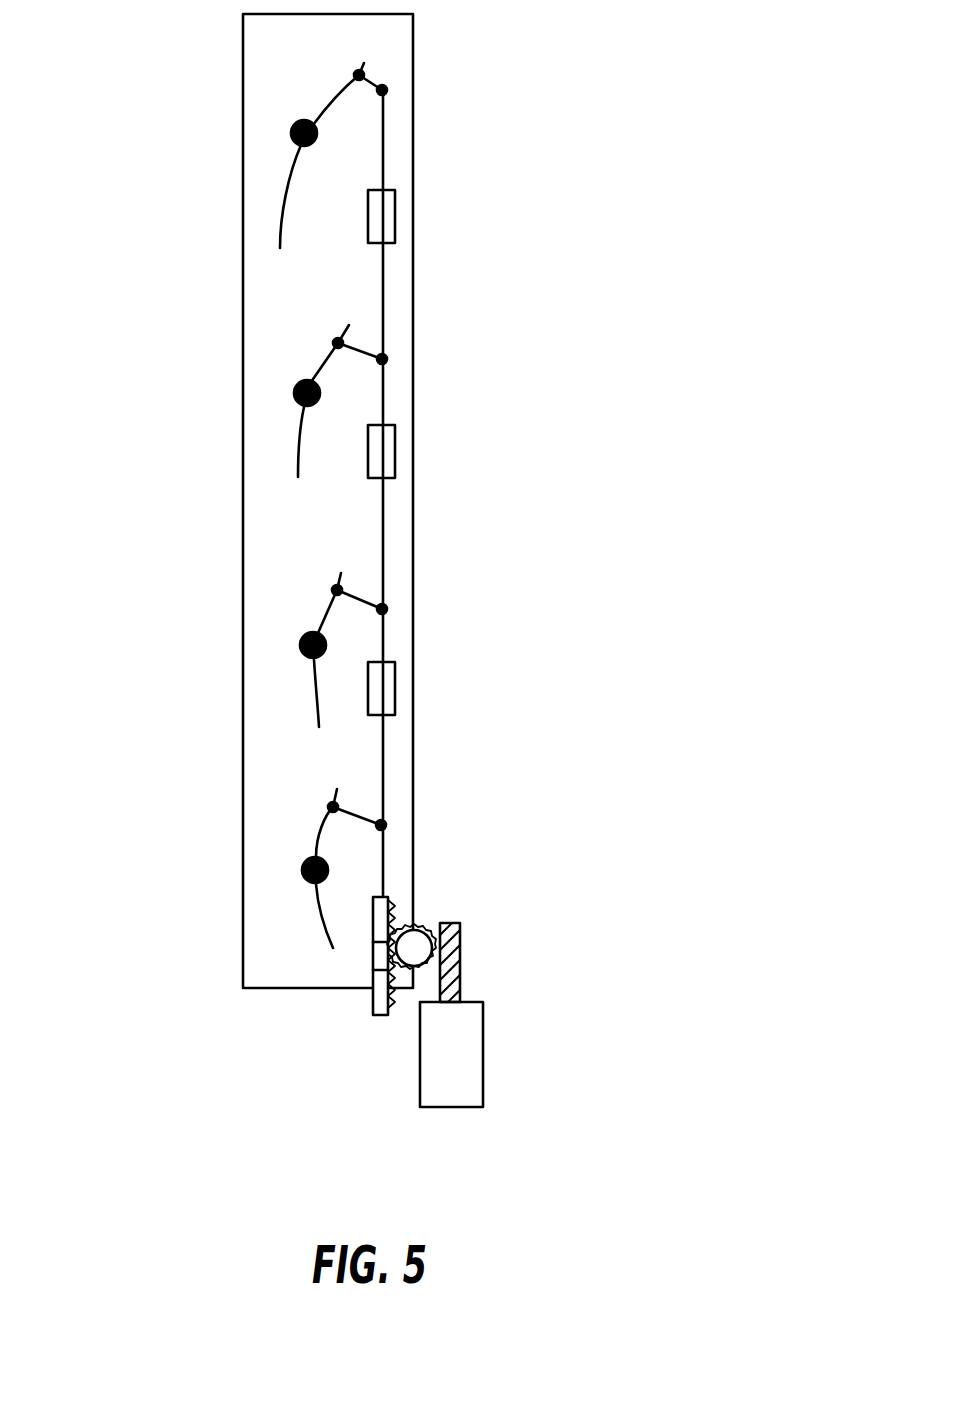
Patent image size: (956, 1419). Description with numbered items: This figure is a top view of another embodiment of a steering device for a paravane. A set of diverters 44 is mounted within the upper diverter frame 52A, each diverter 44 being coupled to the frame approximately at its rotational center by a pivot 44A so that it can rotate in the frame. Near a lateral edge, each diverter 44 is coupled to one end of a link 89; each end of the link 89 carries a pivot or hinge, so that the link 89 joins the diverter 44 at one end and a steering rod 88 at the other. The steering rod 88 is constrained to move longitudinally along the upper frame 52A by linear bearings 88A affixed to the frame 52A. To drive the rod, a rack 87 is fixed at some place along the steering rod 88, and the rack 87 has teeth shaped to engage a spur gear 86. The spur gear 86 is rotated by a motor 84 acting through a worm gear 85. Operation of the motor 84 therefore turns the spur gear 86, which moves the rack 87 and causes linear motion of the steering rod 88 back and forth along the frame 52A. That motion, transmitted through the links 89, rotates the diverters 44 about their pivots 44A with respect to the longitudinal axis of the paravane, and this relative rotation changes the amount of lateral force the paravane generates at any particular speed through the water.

The diverter 44 is at (280, 219).
The pivot 44A is at (318, 133).
The upper diverter frame 52A is at (243, 773).
The motor 84 is at (483, 1053).
The worm gear 85 is at (462, 975).
The spur gear 86 is at (427, 923).
The rack 87 is at (372, 1005).
The steering rod 88 is at (385, 540).
The linear bearing 88A is at (395, 218).
The link 89 is at (370, 80).